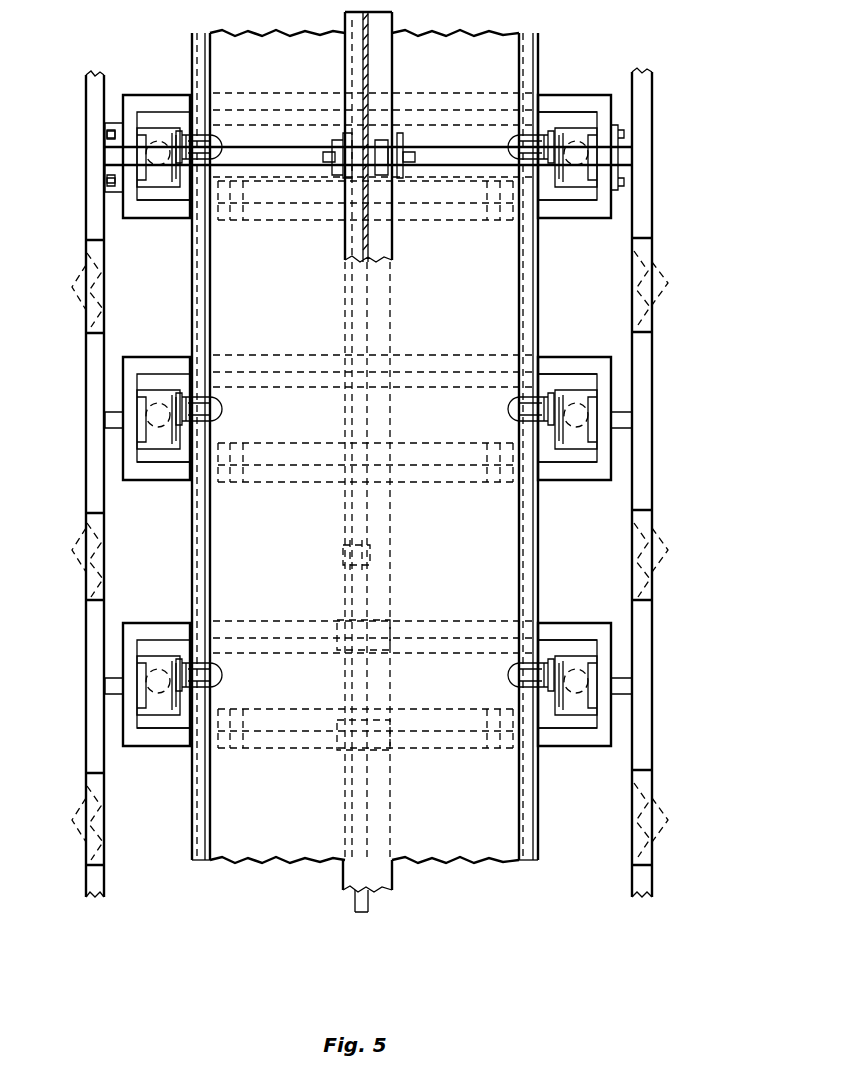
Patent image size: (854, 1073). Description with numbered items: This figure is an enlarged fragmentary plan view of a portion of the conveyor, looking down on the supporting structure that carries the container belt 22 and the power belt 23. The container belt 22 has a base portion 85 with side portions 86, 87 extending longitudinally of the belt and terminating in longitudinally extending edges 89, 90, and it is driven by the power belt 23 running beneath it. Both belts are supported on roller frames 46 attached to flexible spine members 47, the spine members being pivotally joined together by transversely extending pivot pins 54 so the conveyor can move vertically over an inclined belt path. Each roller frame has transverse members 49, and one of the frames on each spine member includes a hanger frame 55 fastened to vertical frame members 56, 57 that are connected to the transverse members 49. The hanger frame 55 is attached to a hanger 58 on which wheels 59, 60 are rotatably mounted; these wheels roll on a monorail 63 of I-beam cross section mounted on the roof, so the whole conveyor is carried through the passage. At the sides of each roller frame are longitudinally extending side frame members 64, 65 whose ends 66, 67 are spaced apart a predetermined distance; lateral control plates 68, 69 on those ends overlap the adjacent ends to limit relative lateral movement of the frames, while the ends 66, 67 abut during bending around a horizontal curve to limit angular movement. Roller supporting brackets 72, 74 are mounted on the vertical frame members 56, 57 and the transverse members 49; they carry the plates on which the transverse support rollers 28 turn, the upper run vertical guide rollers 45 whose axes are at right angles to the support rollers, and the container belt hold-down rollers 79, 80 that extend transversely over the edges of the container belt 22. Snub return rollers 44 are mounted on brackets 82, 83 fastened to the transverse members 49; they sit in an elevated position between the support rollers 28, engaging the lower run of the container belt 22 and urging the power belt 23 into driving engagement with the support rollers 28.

The container belt 22 is at (462, 45).
The power belt 23 is at (395, 315).
The support rollers 28 is at (188, 205).
The snub return rollers 44 is at (468, 205).
The vertical guide rollers 45 is at (107, 181).
The roller frames 46 is at (618, 112).
The flexible spine members 47 is at (352, 287).
The transverse members 49 is at (583, 105).
The pivot pins 54 is at (343, 553).
The hanger frame 55 is at (290, 168).
The vertical frame member 56 is at (128, 105).
The vertical frame member 57 is at (604, 100).
The hanger 58 is at (402, 134).
The wheel 59 is at (345, 132).
The wheel 60 is at (383, 138).
The monorail 63 is at (380, 42).
The side frame member 64 is at (86, 132).
The side frame member 65 is at (652, 146).
The ends 66 is at (69, 556).
The ends 67 is at (668, 554).
The lateral control plate 68 is at (104, 285).
The lateral control plate 69 is at (632, 285).
The roller supporting bracket 72 is at (160, 128).
The roller supporting bracket 74 is at (578, 128).
The container belt hold-down roller 79 is at (216, 133).
The container belt hold-down roller 80 is at (512, 133).
The bracket 82 is at (232, 220).
The bracket 83 is at (503, 220).
The base portion 85 is at (392, 875).
The side portion 86 is at (192, 48).
The side portion 87 is at (538, 48).
The edge 89 is at (192, 855).
The edge 90 is at (538, 855).